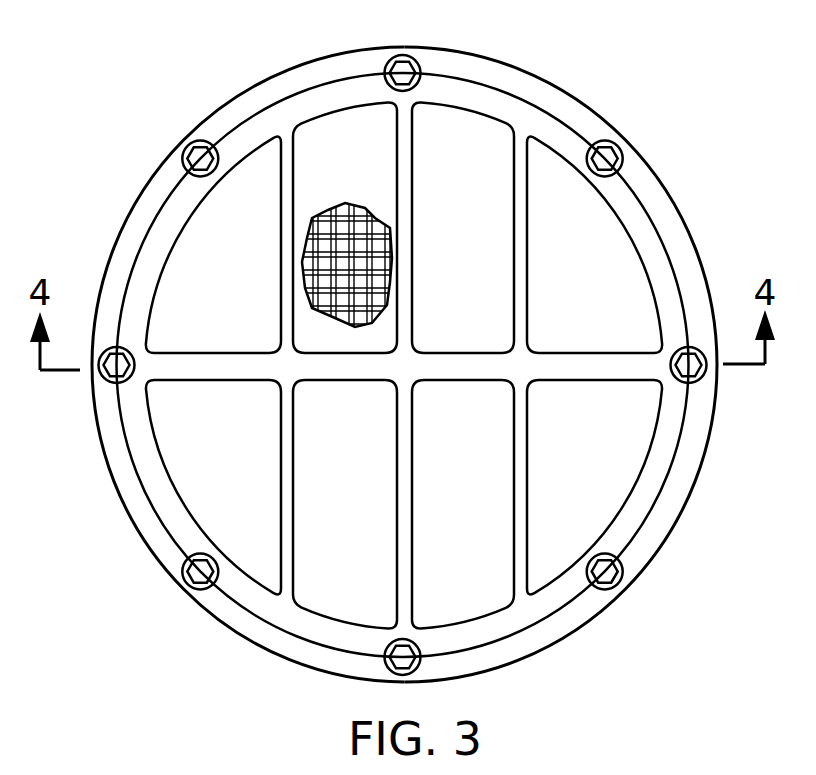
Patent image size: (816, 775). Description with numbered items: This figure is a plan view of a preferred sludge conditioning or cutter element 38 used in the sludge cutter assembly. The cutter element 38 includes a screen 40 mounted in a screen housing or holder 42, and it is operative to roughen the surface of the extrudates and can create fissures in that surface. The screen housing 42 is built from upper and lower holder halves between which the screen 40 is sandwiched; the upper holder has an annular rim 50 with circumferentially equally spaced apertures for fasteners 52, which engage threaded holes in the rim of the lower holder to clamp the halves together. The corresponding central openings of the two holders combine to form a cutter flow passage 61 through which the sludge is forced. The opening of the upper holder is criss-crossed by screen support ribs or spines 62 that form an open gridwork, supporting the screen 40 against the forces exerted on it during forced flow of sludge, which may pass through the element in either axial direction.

The sludge conditioning or cutter element 38 is at (630, 111).
The screen 40 is at (333, 127).
The screen housing or holder 42 is at (127, 534).
The annular rim 50 is at (673, 500).
The fasteners 52 is at (197, 578).
The cutter flow passage 61 is at (600, 249).
The screen support ribs or spines 62 is at (462, 363).